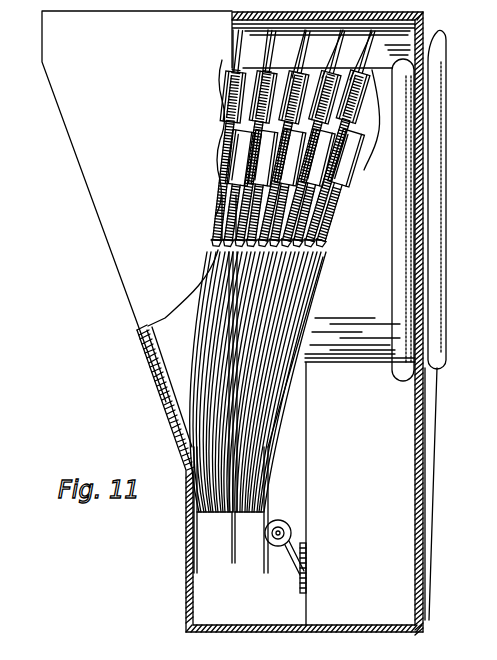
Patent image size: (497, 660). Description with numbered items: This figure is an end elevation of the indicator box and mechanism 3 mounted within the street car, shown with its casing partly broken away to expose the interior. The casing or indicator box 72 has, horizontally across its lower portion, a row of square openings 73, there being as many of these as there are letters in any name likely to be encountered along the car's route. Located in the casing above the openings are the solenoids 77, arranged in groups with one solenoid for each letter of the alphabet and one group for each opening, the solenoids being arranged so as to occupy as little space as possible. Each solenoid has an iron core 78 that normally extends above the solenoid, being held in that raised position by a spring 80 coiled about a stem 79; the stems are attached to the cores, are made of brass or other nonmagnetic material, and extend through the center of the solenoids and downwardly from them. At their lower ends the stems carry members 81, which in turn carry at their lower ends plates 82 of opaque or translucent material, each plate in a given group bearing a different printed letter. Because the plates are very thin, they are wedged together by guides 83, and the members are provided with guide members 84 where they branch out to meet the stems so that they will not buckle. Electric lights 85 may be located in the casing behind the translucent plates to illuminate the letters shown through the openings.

The indicator box and mechanism 3 is at (244, 325).
The casing or indicator box 72 is at (187, 598).
The square openings 73 is at (192, 552).
The solenoids 77 is at (243, 107).
The iron core 78 is at (234, 48).
The stems 79 is at (323, 237).
The springs 80 is at (233, 213).
The members 81 is at (275, 300).
The plates 82 is at (232, 548).
The guides 83 is at (262, 568).
The guide members 84 is at (280, 405).
The electric lights 85 is at (290, 522).